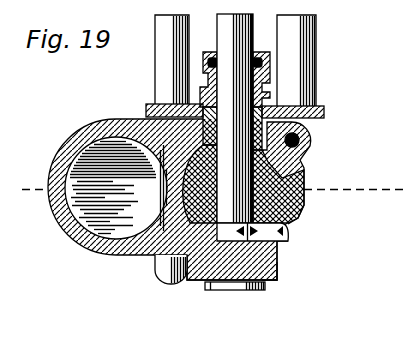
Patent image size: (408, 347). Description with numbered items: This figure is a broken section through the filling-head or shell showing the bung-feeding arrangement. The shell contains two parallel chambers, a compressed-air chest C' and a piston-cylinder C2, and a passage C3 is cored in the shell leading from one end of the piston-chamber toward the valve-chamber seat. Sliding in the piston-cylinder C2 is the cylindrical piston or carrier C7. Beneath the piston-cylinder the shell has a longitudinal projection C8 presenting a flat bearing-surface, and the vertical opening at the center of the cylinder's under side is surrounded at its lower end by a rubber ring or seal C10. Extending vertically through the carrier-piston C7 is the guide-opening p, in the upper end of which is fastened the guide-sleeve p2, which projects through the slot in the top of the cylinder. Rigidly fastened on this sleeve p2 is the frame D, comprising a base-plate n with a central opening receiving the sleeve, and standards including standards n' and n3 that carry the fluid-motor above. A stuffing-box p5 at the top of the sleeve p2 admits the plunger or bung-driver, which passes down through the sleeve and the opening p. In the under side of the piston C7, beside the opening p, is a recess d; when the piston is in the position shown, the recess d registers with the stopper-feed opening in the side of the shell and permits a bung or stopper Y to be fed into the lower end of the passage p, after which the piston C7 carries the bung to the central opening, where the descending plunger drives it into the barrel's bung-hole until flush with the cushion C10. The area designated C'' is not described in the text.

The compressed-air chest C' is at (179, 184).
The casing bore C'' is at (94, 186).
The piston-cylinder C2 is at (304, 174).
The passage C3 is at (300, 139).
The cylindrical piston or carrier C7 is at (163, 259).
The projection C8 is at (266, 272).
The rubber ring or seal C10 is at (228, 287).
The base-plate n is at (236, 105).
The standard n' is at (309, 60).
The standard n3 is at (167, 45).
The vertical guide-opening p is at (213, 178).
The guide-sleeve p2 is at (272, 97).
The stuffing-box p5 is at (268, 52).
The bung or stopper Y is at (287, 234).
The recess d is at (254, 244).